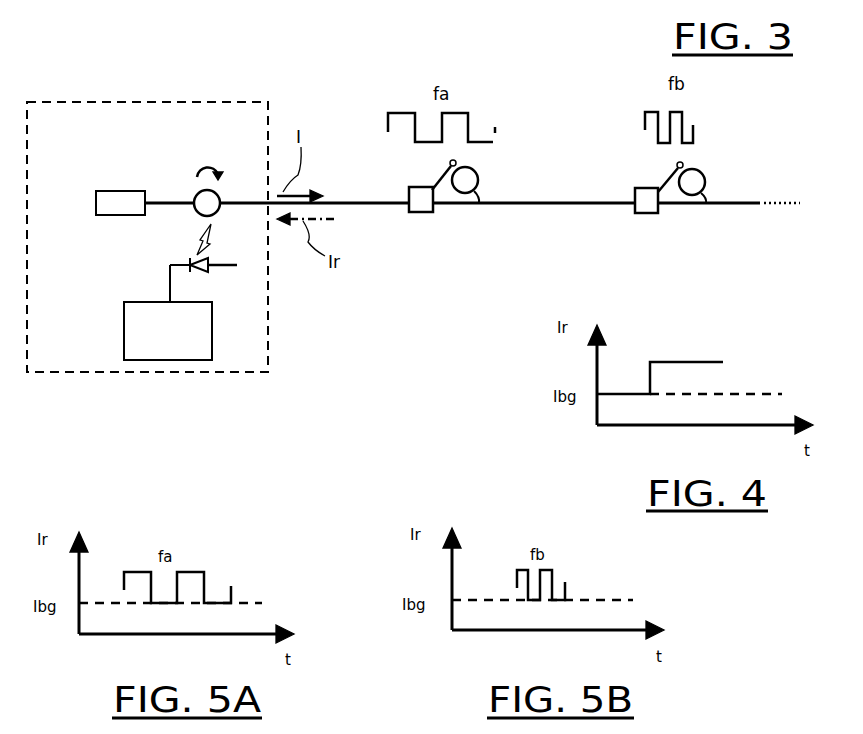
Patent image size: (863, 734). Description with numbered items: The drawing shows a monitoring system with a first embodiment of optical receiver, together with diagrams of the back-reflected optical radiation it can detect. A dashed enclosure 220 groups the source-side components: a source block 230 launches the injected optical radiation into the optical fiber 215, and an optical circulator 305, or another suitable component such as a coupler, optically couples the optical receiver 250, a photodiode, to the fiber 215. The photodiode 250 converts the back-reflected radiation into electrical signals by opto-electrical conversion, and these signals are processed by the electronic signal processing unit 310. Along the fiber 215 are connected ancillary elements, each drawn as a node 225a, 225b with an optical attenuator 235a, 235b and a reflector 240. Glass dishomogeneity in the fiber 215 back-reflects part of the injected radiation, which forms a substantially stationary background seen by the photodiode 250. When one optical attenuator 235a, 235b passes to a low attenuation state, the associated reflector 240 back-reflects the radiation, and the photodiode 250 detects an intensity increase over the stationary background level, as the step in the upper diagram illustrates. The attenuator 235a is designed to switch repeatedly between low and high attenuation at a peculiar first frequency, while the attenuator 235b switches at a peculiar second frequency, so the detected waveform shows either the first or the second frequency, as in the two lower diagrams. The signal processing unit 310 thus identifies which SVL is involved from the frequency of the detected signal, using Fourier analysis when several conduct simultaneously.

The optical fiber 215 is at (717, 204).
The control unit 220 is at (143, 102).
The power source 230 is at (110, 191).
The optical circulator 305 is at (194, 193).
The optical receiver 250 is at (181, 258).
The electronic signal processing unit 310 is at (124, 337).
The first sensor node 225a is at (381, 173).
The optical attenuator 235a is at (409, 193).
The second sensor node 225b is at (606, 170).
The optical attenuator 235b is at (635, 195).
The reflector 240 is at (478, 187).